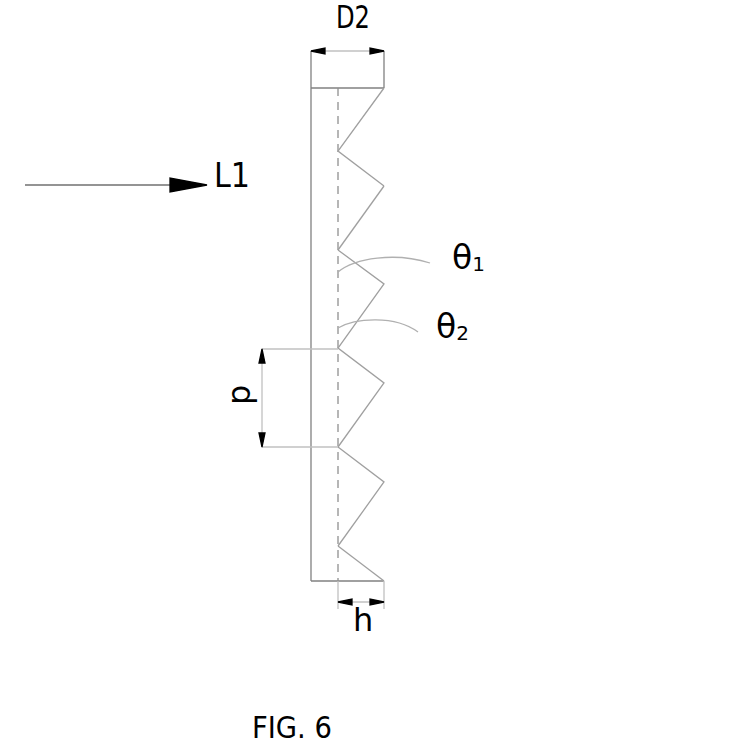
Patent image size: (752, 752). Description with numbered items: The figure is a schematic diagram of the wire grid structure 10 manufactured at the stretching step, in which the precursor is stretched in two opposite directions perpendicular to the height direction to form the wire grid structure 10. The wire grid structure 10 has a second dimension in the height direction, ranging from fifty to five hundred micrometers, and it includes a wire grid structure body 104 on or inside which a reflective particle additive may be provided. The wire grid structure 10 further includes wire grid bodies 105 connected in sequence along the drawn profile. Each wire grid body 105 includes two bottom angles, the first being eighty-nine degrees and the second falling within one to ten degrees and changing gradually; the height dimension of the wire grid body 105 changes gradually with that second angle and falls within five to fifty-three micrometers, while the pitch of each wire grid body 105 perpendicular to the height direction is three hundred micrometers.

The wire grid structure 10 is at (375, 117).
The wire grid structure body 104 is at (320, 248).
The wire grid body 105 is at (352, 500).